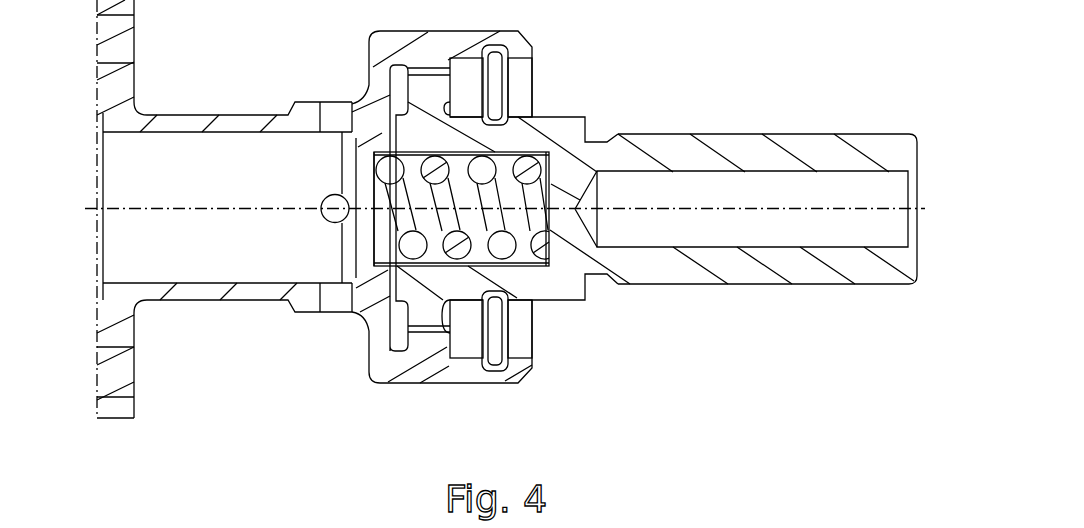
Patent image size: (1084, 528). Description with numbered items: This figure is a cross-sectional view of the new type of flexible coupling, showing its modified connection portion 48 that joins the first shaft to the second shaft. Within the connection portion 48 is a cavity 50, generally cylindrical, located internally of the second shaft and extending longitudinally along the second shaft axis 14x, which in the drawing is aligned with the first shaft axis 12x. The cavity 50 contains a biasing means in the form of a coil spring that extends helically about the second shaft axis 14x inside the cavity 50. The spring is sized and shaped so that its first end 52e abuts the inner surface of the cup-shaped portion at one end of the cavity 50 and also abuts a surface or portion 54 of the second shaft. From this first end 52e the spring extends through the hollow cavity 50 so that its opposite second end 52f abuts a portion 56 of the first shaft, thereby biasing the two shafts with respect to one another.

The first connection body with flange and hub 12x is at (82, 217).
The second shaft axis 14x is at (768, 209).
The connection portion 48 is at (452, 148).
The cavity 50 is at (478, 262).
The first end of the spring 52e is at (388, 272).
The second end of the spring 52f is at (535, 247).
The portion of the second shaft 54 is at (550, 188).
The portion of the first shaft 56 is at (390, 218).